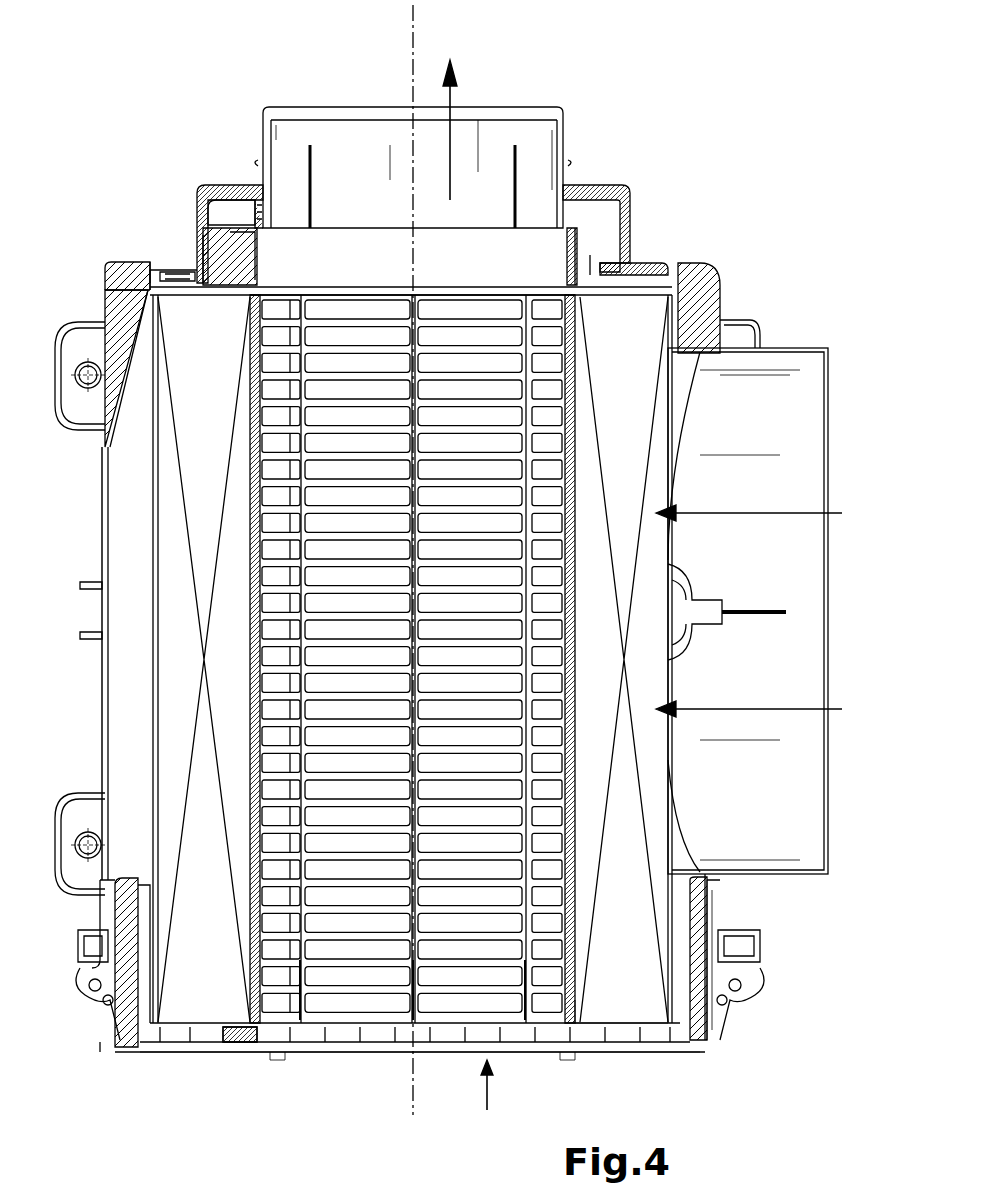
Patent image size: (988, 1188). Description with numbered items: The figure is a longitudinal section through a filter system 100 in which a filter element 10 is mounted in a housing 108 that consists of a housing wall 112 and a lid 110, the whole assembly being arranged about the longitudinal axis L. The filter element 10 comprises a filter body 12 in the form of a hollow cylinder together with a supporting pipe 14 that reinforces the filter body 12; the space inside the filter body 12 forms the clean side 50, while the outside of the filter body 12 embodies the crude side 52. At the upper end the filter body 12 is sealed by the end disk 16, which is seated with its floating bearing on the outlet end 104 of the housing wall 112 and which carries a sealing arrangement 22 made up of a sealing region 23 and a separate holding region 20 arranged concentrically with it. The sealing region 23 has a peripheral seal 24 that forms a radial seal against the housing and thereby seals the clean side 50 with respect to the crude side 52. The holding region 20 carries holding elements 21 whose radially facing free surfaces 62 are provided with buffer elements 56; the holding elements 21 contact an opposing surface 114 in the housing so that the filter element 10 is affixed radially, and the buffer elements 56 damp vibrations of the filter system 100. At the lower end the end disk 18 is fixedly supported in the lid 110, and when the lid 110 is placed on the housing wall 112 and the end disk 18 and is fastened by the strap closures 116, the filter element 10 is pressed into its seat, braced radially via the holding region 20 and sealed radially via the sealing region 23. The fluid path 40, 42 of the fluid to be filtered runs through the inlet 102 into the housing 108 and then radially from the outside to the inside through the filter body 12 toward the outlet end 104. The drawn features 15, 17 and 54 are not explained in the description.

The filter element 10 is at (617, 339).
The filter body 12 is at (655, 432).
The supporting pipe 14 is at (578, 1025).
The cover flange 15 is at (645, 240).
The end disk 16 is at (660, 272).
The bottom inlet direction 17 is at (496, 1100).
The end disk 18 is at (248, 1036).
The holding region 20 is at (190, 241).
The holding elements 21 is at (216, 216).
The sealing arrangement 22 is at (228, 176).
The sealing region 23 is at (277, 173).
The peripheral seal 24 is at (272, 201).
The fluid path 40 is at (798, 513).
The fluid path 42 is at (452, 138).
The clean side 50 is at (372, 948).
The crude side 52 is at (142, 678).
The end plate 54 is at (250, 240).
The buffer elements 56 is at (215, 272).
The free surfaces 62 is at (222, 238).
The filter system 100 is at (707, 242).
The inlet 102 is at (806, 665).
The outlet end 104 is at (388, 138).
The housing 108 is at (100, 578).
The lid 110 is at (632, 1050).
The housing wall 112 is at (100, 733).
The opposing surface 114 is at (216, 232).
The strap closures 116 is at (758, 942).
The longitudinal axis L is at (418, 28).